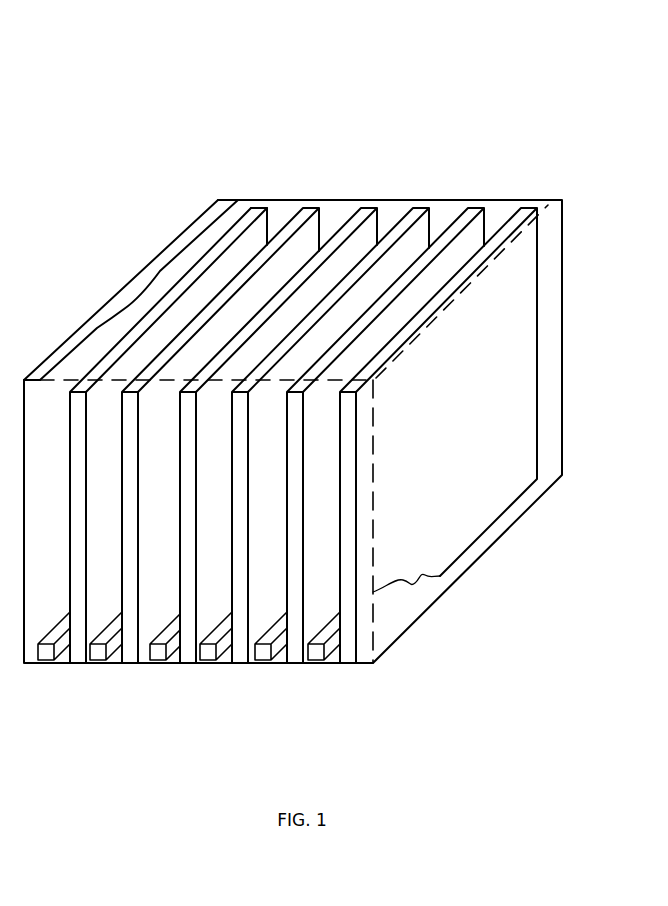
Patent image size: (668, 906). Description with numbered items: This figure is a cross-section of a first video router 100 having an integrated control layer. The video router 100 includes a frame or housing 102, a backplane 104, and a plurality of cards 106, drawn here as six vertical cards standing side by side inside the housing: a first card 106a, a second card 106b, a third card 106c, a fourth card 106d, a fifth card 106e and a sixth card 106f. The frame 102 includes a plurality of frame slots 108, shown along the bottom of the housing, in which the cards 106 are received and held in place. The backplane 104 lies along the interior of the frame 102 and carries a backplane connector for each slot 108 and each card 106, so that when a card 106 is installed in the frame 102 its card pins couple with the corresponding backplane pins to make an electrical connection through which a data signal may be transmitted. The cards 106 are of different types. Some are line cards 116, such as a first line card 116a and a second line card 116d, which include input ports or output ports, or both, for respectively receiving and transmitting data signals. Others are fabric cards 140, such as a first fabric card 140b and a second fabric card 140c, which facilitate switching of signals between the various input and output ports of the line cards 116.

The video router 100 is at (334, 410).
The frame 102 is at (398, 612).
The backplane 104 is at (276, 216).
The cards 106 is at (357, 348).
The first card 106a is at (252, 208).
The second card 106b is at (305, 208).
The third card 106c is at (374, 206).
The fourth card 106d is at (422, 205).
The fifth card 106e is at (477, 206).
The sixth card 106f is at (545, 202).
The frame slots 108 is at (75, 664).
The line cards 116 is at (314, 725).
The first line card 116a is at (193, 664).
The second line card 116d is at (352, 664).
The fabric cards 140 is at (280, 715).
The first fabric card 140b is at (245, 664).
The second fabric card 140c is at (308, 693).